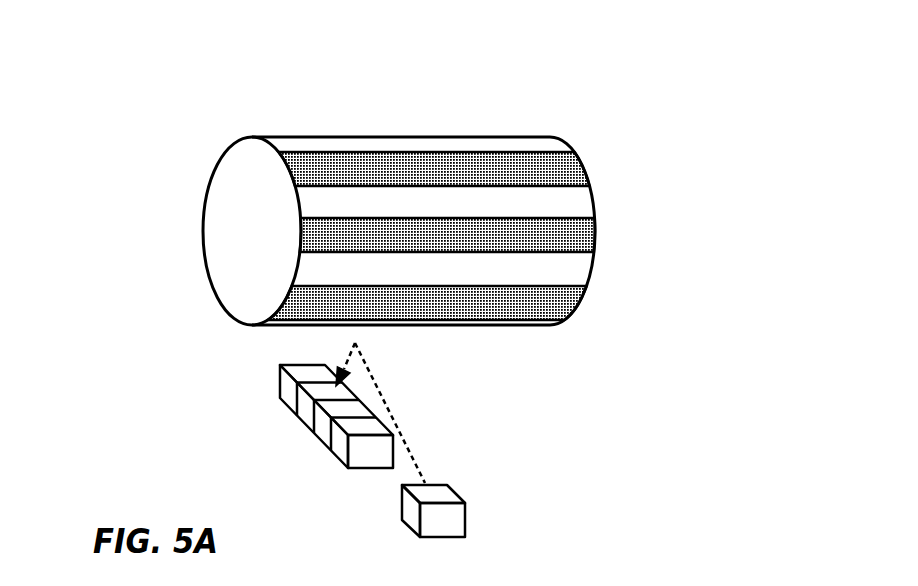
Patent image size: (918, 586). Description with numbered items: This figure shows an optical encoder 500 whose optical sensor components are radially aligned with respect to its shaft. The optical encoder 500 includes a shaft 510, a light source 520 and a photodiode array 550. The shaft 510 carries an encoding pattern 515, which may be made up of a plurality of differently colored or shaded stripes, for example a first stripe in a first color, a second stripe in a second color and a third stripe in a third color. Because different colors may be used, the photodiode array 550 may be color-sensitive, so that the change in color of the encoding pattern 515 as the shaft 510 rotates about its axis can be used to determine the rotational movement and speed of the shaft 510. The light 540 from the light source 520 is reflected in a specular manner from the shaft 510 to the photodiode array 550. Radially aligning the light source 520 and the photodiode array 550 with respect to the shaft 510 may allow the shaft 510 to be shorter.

The optical encoder 500 is at (130, 90).
The shaft 510 is at (573, 150).
The encoding pattern 515 is at (413, 165).
The light source 520 is at (463, 503).
The light 540 is at (383, 400).
The photodiode array 550 is at (315, 430).